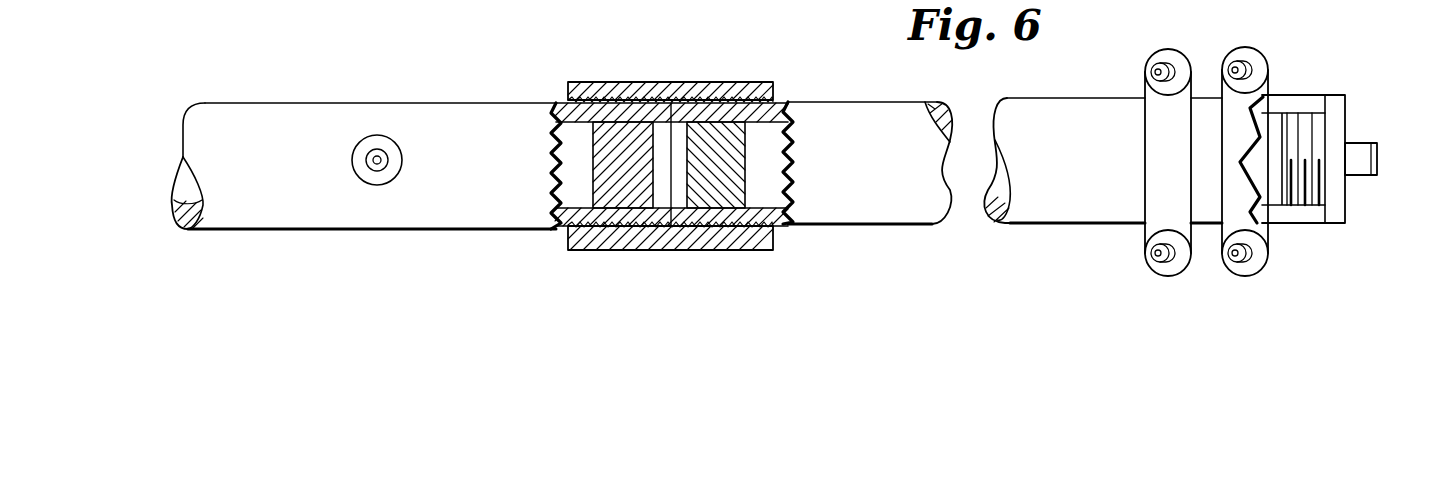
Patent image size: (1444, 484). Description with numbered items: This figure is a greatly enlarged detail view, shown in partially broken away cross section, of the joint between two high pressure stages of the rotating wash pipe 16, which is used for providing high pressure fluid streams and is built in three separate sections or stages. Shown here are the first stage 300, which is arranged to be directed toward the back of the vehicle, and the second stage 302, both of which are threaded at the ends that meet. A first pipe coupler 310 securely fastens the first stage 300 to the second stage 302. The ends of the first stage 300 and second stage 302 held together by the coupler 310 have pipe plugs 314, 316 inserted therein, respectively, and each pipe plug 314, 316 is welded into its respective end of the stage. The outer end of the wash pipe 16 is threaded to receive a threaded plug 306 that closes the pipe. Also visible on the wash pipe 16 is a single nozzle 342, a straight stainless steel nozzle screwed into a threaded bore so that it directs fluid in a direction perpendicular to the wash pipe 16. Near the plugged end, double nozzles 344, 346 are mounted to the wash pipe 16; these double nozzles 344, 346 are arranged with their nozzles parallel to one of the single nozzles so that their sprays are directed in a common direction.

The rotating wash pipe 16 is at (366, 167).
The first stage 300 is at (874, 226).
The second stage 302 is at (371, 232).
The threaded plug 306 is at (1342, 112).
The first pipe coupler 310 is at (660, 82).
The pipe plug 314 is at (725, 190).
The pipe plug 316 is at (620, 195).
The single nozzle 342 is at (373, 135).
The double nozzle 344 is at (1262, 251).
The double nozzle 346 is at (1150, 241).